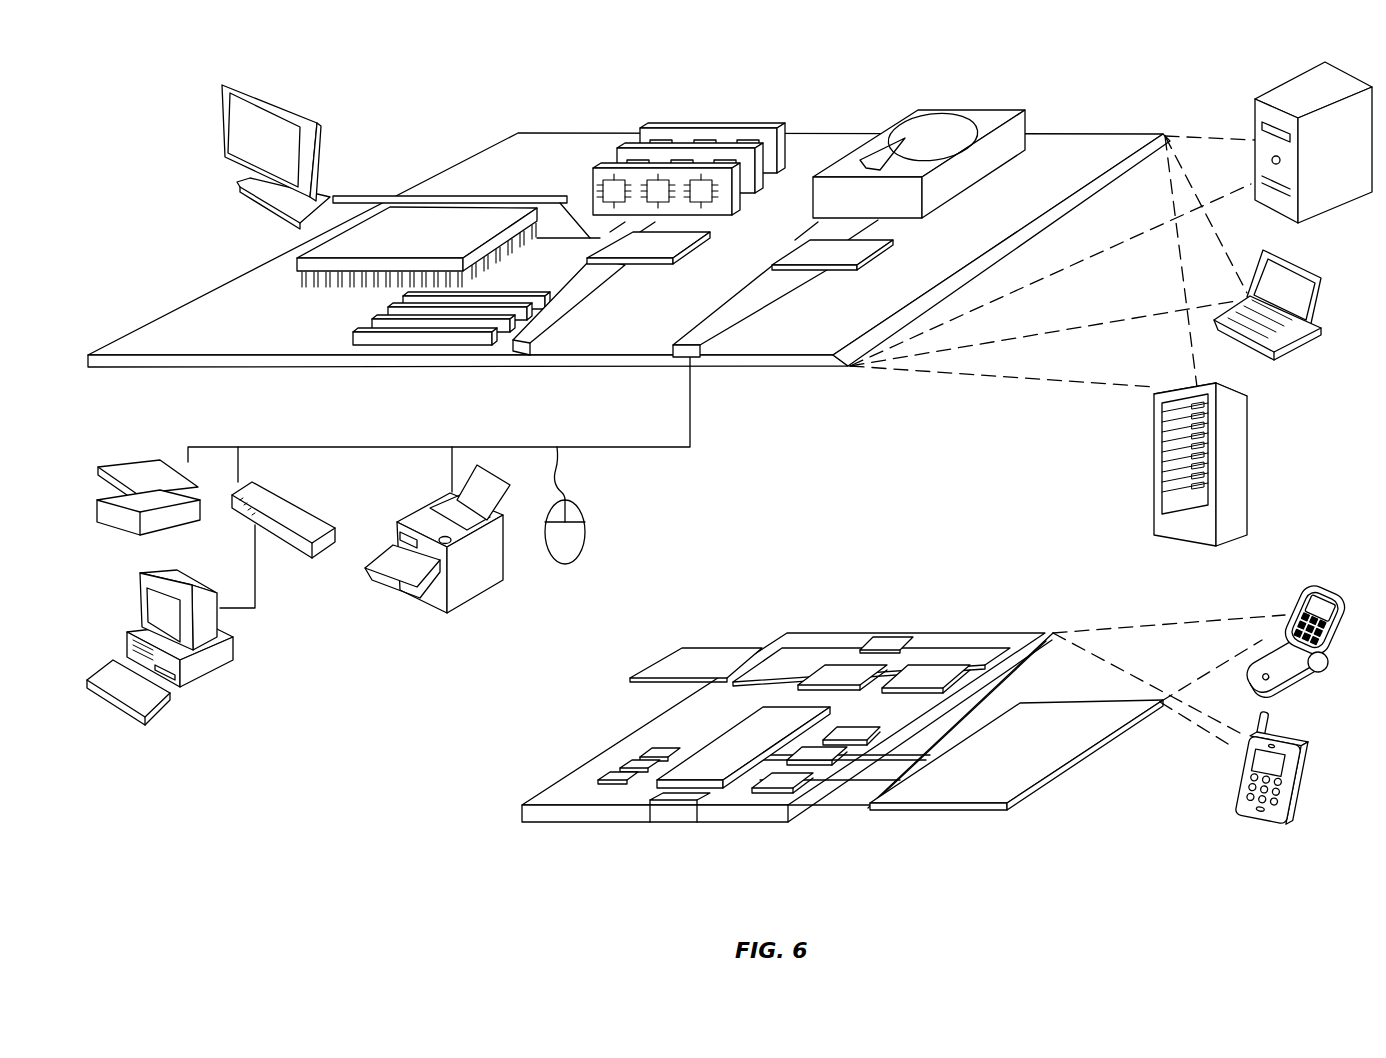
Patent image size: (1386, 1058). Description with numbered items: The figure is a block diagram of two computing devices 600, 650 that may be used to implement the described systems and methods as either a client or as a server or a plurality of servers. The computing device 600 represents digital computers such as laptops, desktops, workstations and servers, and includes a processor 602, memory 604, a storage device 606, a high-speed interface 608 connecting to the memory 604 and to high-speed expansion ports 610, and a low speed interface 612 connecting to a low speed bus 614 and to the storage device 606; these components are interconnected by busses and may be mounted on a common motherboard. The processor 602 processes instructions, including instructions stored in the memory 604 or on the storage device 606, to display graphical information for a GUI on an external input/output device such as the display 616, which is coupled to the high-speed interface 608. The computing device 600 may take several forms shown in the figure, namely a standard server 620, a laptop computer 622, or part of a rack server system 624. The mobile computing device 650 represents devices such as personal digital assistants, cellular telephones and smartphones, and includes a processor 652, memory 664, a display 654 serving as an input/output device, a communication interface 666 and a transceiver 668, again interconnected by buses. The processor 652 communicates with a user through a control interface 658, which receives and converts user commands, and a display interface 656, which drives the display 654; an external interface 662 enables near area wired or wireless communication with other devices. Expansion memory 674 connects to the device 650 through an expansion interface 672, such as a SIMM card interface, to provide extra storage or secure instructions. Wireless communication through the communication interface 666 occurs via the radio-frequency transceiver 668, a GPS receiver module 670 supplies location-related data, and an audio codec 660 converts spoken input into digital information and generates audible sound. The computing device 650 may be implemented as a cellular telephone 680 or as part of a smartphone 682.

The computing device 600 is at (434, 111).
The processor 602 is at (300, 262).
The memory 604 is at (660, 145).
The storage device 606 is at (900, 118).
The high-speed interface 608 is at (625, 245).
The high-speed expansion ports 610 is at (370, 327).
The low speed interface 612 is at (810, 245).
The low speed bus 614 is at (700, 357).
The display 616 is at (222, 80).
The standard server 620 is at (1250, 116).
The laptop computer 622 is at (1320, 278).
The rack server system 624 is at (1154, 490).
The computing device 650 is at (500, 820).
The processor 652 is at (713, 770).
The display 654 is at (978, 794).
The display interface 656 is at (790, 782).
The control interface 658 is at (828, 766).
The audio codec 660 is at (853, 746).
The external interface 662 is at (677, 808).
The memory 664 is at (618, 770).
The communication interface 666 is at (845, 672).
The transceiver 668 is at (930, 672).
The GPS receiver module 670 is at (880, 640).
The expansion interface 672 is at (768, 643).
The expansion memory 674 is at (686, 650).
The cellular telephone 680 is at (1300, 596).
The smartphone 682 is at (1244, 776).